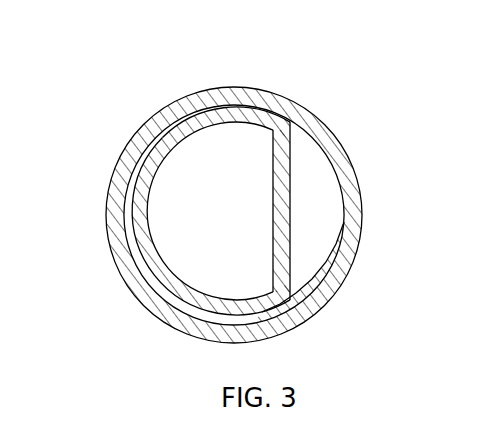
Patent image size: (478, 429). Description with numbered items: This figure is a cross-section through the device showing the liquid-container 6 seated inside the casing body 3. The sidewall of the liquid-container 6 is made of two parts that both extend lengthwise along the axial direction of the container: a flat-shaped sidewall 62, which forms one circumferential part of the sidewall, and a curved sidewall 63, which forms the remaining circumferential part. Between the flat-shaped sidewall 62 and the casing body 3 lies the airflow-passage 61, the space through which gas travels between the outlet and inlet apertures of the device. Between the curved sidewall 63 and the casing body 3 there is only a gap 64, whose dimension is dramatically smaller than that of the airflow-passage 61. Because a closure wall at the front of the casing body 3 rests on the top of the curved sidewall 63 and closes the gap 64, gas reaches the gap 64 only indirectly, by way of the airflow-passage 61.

The casing body 3 is at (352, 201).
The liquid-container 6 is at (235, 176).
The airflow-passage 61 is at (310, 240).
The flat-shaped sidewall 62 is at (280, 250).
The curved sidewall 63 is at (137, 201).
The gap 64 is at (193, 120).